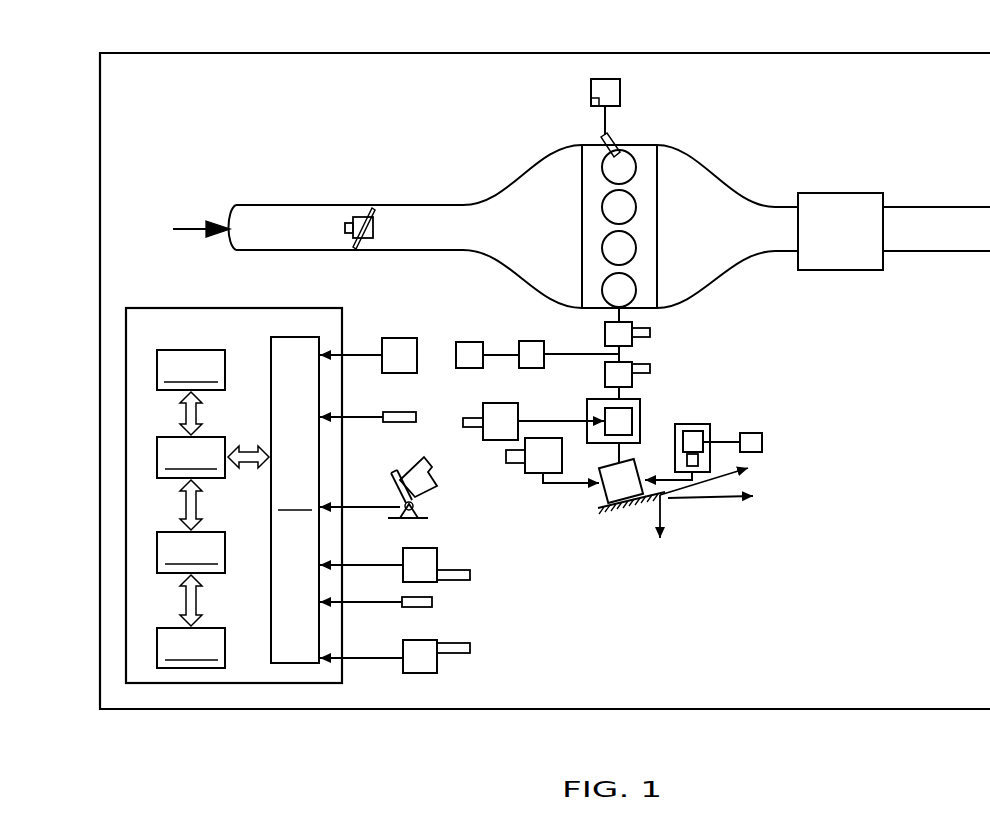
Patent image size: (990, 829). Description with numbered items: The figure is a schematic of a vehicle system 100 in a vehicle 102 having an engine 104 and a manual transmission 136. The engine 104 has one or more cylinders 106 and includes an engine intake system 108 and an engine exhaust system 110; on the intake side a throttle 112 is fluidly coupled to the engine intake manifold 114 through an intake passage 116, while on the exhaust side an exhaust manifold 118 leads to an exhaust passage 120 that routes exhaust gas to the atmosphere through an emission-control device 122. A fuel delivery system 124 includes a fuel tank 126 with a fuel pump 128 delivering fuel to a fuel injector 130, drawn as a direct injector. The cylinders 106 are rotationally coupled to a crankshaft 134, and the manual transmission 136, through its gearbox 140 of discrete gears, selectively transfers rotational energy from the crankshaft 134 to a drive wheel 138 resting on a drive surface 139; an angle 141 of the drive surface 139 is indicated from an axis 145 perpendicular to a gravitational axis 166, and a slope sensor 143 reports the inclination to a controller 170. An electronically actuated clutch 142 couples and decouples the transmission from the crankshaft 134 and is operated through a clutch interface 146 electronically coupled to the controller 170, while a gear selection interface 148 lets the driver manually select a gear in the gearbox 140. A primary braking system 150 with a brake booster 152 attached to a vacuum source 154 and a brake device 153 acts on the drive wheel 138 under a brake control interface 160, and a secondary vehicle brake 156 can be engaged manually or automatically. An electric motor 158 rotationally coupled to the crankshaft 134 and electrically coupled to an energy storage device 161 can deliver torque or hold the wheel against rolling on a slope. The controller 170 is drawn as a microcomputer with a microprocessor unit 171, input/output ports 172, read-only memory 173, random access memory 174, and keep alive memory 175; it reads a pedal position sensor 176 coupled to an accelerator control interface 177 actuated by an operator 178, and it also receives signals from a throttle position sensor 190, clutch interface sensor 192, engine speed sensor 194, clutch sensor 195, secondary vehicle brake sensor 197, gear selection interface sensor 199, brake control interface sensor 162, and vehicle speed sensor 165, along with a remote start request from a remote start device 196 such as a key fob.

The vehicle system 100 is at (243, 157).
The vehicle 102 is at (153, 53).
The engine 104 is at (660, 175).
The cylinder 106 is at (640, 205).
The engine intake system 108 is at (400, 170).
The engine exhaust system 110 is at (897, 150).
The throttle 112 is at (375, 236).
The engine intake manifold 114 is at (566, 236).
The intake passage 116 is at (392, 250).
The exhaust manifold 118 is at (746, 236).
The exhaust passage 120 is at (986, 252).
The emission-control device 122 is at (832, 193).
The fuel delivery system 124 is at (553, 97).
The fuel tank 126 is at (621, 93).
The fuel pump 128 is at (594, 102).
The fuel injector 130 is at (611, 143).
The crankshaft 134 is at (605, 334).
The manual transmission 136 is at (640, 408).
The drive wheel 138 is at (600, 496).
The drive surface 139 is at (599, 506).
The gearbox 140 is at (587, 413).
The angle 141 is at (707, 489).
The electronically actuated clutch 142 is at (605, 374).
The slope sensor 143 is at (405, 607).
The axis 145 is at (702, 498).
The clutch interface 146 is at (408, 548).
The gear selection interface 148 is at (501, 403).
The primary braking system 150 is at (703, 436).
The brake booster 152 is at (694, 431).
The brake device 153 is at (687, 461).
The vacuum source 154 is at (762, 441).
The secondary vehicle brake 156 is at (562, 457).
The electric motor 158 is at (533, 341).
The brake control interface 160 is at (408, 673).
The energy storage device 161 is at (469, 342).
The brake control interface sensor 162 is at (470, 648).
The vehicle speed sensor 165 is at (388, 412).
The gravitational axis 166 is at (664, 530).
The controller 170 is at (135, 308).
The microprocessor unit 171 is at (215, 437).
The input/output ports 172 is at (270, 368).
The read-only memory 173 is at (158, 350).
The random access memory 174 is at (215, 532).
The keep alive memory 175 is at (224, 619).
The pedal position sensor 176 is at (418, 512).
The accelerator control interface 177 is at (393, 485).
The operator 178 is at (439, 469).
The throttle position sensor 190 is at (345, 229).
The clutch interface sensor 192 is at (447, 582).
The engine speed sensor 194 is at (650, 332).
The clutch sensor 195 is at (650, 368).
The remote start device 196 is at (388, 338).
The secondary vehicle brake sensor 197 is at (515, 463).
The gear selection interface sensor 199 is at (470, 418).